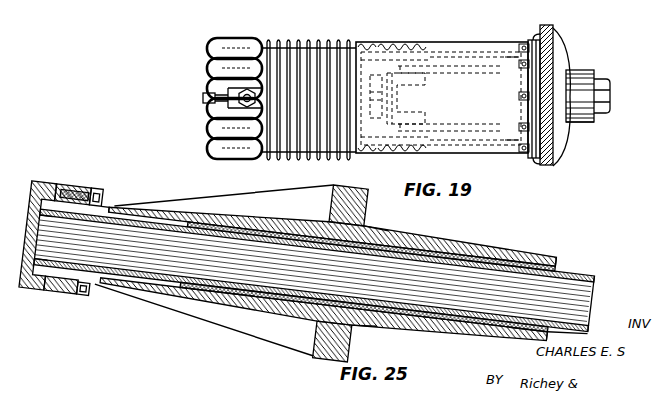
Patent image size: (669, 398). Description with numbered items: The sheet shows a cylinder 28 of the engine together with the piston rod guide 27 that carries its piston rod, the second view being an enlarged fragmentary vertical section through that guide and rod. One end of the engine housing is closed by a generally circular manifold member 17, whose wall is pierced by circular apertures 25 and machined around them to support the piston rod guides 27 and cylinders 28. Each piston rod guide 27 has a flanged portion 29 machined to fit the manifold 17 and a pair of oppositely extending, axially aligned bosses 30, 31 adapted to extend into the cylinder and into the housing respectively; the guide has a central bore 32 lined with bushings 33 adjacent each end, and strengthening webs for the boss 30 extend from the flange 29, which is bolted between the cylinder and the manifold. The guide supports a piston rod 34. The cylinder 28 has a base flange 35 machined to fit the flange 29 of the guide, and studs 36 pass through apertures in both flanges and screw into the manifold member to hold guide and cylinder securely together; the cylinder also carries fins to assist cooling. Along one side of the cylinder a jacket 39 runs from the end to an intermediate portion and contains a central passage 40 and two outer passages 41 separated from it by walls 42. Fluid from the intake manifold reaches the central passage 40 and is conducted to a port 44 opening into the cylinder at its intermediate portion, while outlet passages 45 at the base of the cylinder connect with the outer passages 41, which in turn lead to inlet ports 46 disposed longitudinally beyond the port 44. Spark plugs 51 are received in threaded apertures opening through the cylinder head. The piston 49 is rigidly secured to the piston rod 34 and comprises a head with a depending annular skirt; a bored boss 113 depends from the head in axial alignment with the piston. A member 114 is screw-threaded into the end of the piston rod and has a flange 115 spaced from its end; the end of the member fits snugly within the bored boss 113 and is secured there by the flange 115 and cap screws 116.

In FIG. 19, the manifold member 17 is at (556, 60).
In FIG. 25, the manifold member 17 is at (366, 218).
In FIG. 25, the circular apertures 25 is at (366, 322).
In FIG. 19, the piston rod guide 27 is at (594, 120).
In FIG. 25, the piston rod guide 27 is at (540, 260).
In FIG. 19, the cylinder 28 is at (312, 62).
In FIG. 19, the flanged portion 29 is at (527, 42).
In FIG. 25, the flanged portion 29 is at (318, 348).
In FIG. 25, the boss 30 is at (232, 318).
In FIG. 19, the boss 31 is at (588, 74).
In FIG. 25, the boss 31 is at (505, 340).
In FIG. 25, the central bore 32 is at (410, 234).
In FIG. 25, the bushings 33 is at (192, 214).
In FIG. 19, the piston rod 34 is at (610, 92).
In FIG. 25, the piston rod 34 is at (586, 272).
In FIG. 19, the base flange 35 is at (538, 160).
In FIG. 19, the studs 36 is at (532, 150).
In FIG. 19, the jacket 39 is at (470, 146).
In FIG. 19, the central passage 40 is at (456, 80).
In FIG. 19, the outer passages 41 is at (434, 66).
In FIG. 19, the walls 42 is at (398, 70).
In FIG. 19, the port 44 is at (388, 48).
In FIG. 19, the outlet passages 45 is at (518, 46).
In FIG. 19, the inlet ports 46 is at (368, 60).
In FIG. 25, the piston 49 is at (40, 190).
In FIG. 19, the spark plugs 51 is at (208, 78).
In FIG. 25, the bored boss 113 is at (62, 188).
In FIG. 25, the member 114 is at (110, 204).
In FIG. 25, the flange 115 is at (94, 188).
In FIG. 25, the cap screws 116 is at (82, 296).